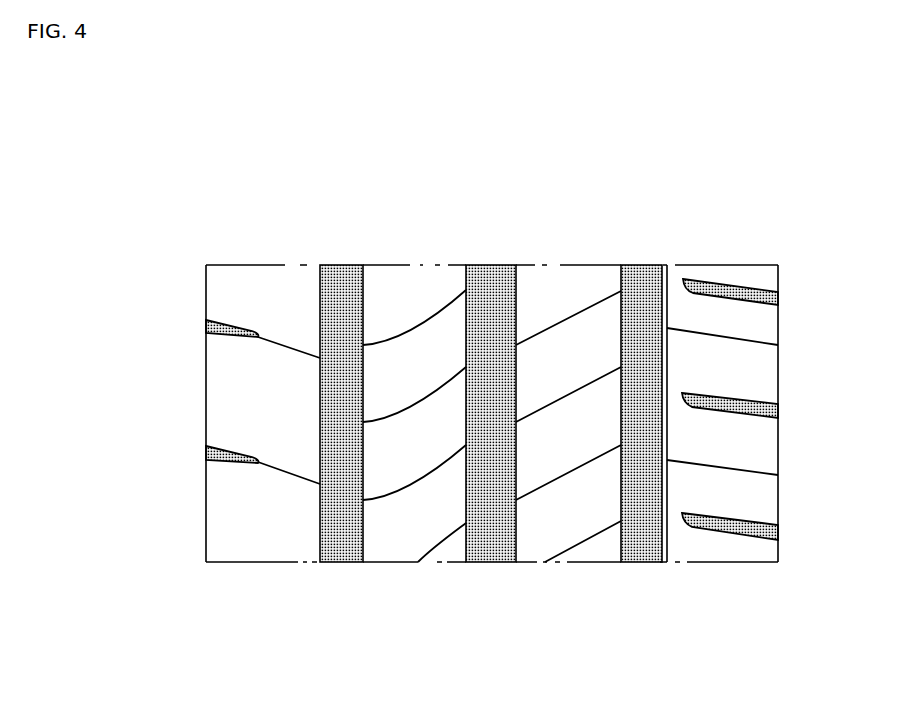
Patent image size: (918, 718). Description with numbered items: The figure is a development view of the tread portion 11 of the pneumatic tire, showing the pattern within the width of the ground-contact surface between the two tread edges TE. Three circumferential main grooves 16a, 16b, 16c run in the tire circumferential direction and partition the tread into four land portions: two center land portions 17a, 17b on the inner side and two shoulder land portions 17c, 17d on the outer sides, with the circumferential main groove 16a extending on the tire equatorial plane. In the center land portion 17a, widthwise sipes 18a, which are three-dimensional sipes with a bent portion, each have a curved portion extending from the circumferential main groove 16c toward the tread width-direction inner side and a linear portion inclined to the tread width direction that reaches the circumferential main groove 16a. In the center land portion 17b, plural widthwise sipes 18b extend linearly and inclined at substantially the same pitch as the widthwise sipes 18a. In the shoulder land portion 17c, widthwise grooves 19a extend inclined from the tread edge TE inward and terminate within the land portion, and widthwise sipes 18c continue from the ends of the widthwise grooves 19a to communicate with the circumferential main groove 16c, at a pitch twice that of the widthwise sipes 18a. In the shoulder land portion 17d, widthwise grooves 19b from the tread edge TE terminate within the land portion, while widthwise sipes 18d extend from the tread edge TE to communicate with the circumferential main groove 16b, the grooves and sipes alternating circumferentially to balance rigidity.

The tread portion 11 is at (747, 202).
The tread edge TE is at (206, 322).
The circumferential main groove 16a is at (490, 265).
The circumferential main groove 16b is at (640, 265).
The circumferential main groove 16c is at (340, 265).
The center land portion 17a is at (425, 563).
The center land portion 17b is at (583, 563).
The shoulder land portion 17c is at (262, 563).
The shoulder land portion 17d is at (725, 563).
The widthwise sipe 18a is at (403, 335).
The widthwise sipe 18b is at (550, 323).
The widthwise sipe 18c is at (283, 345).
The widthwise sipe 18d is at (682, 327).
The widthwise groove 19a is at (237, 444).
The widthwise groove 19b is at (730, 396).